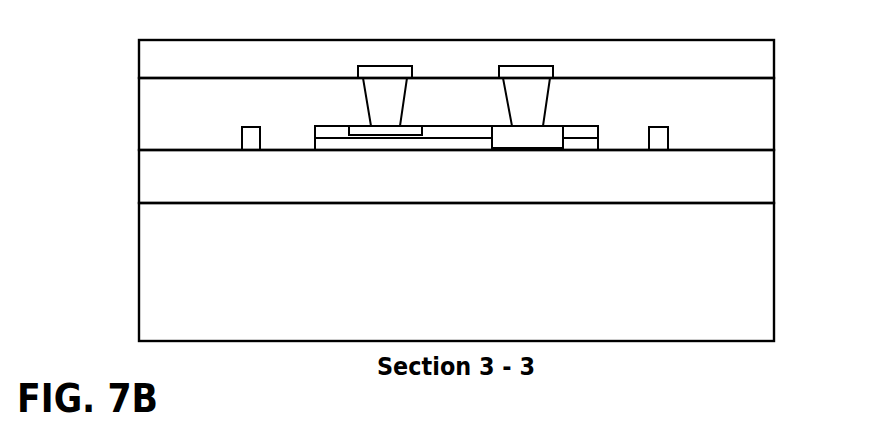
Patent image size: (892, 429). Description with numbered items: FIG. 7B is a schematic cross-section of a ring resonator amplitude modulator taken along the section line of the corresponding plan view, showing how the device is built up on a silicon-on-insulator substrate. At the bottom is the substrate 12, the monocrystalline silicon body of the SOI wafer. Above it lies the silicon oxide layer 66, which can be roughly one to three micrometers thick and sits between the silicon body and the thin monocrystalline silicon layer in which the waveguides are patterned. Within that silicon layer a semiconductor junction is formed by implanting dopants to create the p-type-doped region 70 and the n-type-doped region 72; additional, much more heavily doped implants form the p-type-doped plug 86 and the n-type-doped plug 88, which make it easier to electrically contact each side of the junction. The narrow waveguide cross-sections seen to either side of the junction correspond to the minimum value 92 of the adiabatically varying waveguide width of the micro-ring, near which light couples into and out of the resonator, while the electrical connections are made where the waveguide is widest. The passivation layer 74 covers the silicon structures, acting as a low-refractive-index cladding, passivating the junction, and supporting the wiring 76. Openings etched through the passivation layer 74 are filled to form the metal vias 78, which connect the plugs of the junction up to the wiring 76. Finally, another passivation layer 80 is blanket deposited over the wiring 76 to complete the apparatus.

The substrate 12 is at (198, 309).
The silicon oxide layer 66 is at (198, 186).
The p-type-doped region 70 is at (456, 131).
The n-type-doped region 72 is at (456, 147).
The passivation layer 74 is at (198, 129).
The wiring 76 is at (500, 66).
The metal vias 78 is at (397, 106).
The passivation layer 80 is at (198, 67).
The p-type-doped plug 86 is at (359, 126).
The n-type-doped plug 88 is at (553, 125).
The minimum value of the waveguide width 92 is at (253, 127).